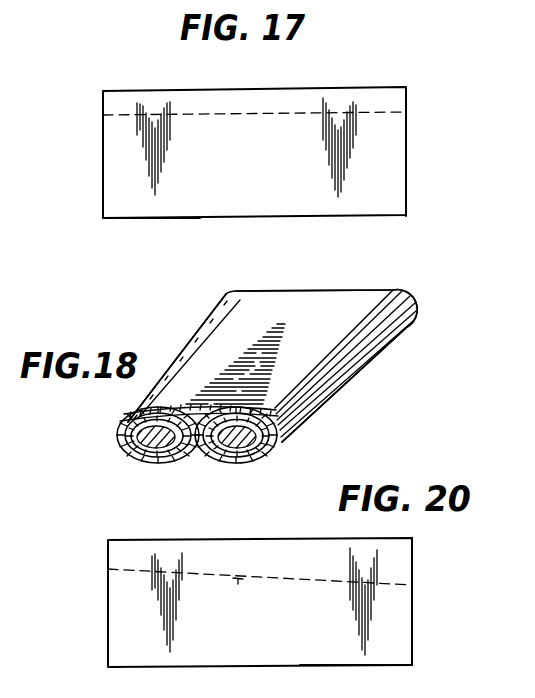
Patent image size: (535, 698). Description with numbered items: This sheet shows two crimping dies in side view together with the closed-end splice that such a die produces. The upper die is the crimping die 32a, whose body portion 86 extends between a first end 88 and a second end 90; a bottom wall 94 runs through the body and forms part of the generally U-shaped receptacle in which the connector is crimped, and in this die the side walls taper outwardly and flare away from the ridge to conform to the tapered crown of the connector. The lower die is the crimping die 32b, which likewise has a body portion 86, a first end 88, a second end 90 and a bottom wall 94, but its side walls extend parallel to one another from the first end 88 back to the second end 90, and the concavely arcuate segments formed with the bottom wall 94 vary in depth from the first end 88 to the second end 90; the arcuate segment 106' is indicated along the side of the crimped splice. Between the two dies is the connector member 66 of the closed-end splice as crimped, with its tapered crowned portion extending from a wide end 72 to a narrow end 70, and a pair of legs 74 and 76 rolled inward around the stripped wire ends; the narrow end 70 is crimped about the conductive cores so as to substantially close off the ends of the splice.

In FIG. 17, the body portion 86 is at (120, 177).
In FIG. 20, the body portion 86 is at (135, 648).
In FIG. 17, the first end 88 is at (103, 135).
In FIG. 20, the first end 88 is at (120, 605).
In FIG. 17, the second end 90 is at (406, 138).
In FIG. 20, the second end 90 is at (412, 621).
In FIG. 17, the bottom wall 94 is at (352, 111).
In FIG. 20, the bottom wall 94 is at (239, 582).
In FIG. 17, the crimping die 32a is at (88, 221).
In FIG. 20, the crimping die 32b is at (422, 642).
In FIG. 18, the connector member 66 is at (392, 360).
In FIG. 18, the wide end 72 is at (302, 301).
In FIG. 18, the leg 74 is at (190, 334).
In FIG. 18, the leg 76 is at (345, 368).
In FIG. 18, the side face 106' is at (344, 397).
In FIG. 18, the narrow end 70 is at (194, 468).